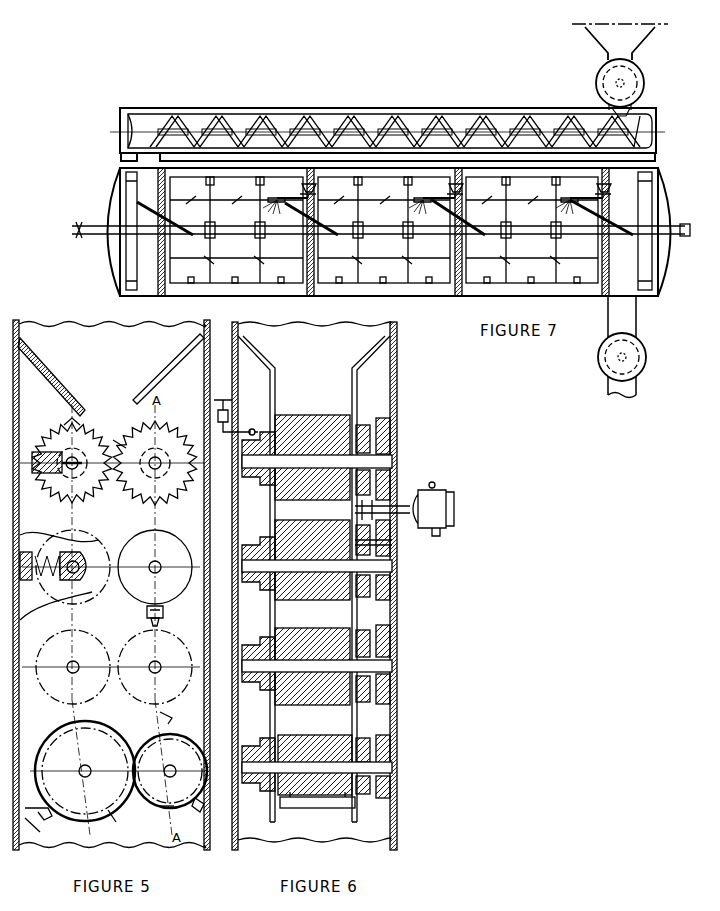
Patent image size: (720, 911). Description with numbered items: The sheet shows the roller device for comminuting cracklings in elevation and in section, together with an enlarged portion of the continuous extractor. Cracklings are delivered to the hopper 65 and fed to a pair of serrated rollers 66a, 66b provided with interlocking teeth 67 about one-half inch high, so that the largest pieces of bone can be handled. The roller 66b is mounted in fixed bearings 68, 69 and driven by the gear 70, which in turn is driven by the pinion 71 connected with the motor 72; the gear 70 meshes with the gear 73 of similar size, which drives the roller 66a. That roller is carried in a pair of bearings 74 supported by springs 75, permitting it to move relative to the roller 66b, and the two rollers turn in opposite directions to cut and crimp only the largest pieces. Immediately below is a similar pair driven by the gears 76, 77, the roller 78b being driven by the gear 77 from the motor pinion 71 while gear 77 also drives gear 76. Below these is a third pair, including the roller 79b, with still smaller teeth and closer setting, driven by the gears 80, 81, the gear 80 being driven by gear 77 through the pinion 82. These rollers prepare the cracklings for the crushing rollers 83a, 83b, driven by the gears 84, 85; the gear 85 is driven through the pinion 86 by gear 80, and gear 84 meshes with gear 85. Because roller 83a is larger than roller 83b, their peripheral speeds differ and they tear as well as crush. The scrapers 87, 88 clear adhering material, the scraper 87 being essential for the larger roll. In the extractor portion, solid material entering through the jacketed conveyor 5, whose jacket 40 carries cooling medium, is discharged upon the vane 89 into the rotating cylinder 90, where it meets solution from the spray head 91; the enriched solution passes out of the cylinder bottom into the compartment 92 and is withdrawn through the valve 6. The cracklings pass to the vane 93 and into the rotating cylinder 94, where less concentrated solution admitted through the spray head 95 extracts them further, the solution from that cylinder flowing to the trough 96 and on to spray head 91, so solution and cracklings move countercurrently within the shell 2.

In FIG. 7, the cylindrical shell 2 is at (381, 239).
In FIG. 7, the conveyor 5 is at (444, 126).
In FIG. 7, the valve 6 is at (381, 223).
In FIG. 7, the jacket 40 is at (396, 108).
In FIG. 5, the hopper 65 is at (70, 395).
In FIG. 5, the roller 66a is at (71, 463).
In FIG. 5, the roller 66b is at (154, 463).
In FIG. 6, the roller 66b is at (312, 457).
In FIG. 5, the interlocking teeth 67 is at (172, 420).
In FIG. 6, the fixed bearing 68 is at (252, 486).
In FIG. 6, the fixed bearing 69 is at (362, 424).
In FIG. 5, the gear 70 is at (130, 420).
In FIG. 6, the gear 70 is at (397, 446).
In FIG. 5, the pinion 71 is at (165, 526).
In FIG. 6, the pinion 71 is at (410, 490).
In FIG. 6, the motor 72 is at (454, 505).
In FIG. 5, the gear 73 is at (66, 425).
In FIG. 5, the bearings 74 is at (62, 482).
In FIG. 5, the springs 75 is at (40, 596).
In FIG. 5, the gear 76 is at (92, 600).
In FIG. 5, the gear 77 is at (147, 612).
In FIG. 6, the gear 77 is at (396, 553).
In FIG. 6, the roller 78b is at (312, 560).
In FIG. 6, the roller 79b is at (312, 666).
In FIG. 5, the gear 80 is at (155, 667).
In FIG. 6, the gear 80 is at (392, 654).
In FIG. 5, the gear 81 is at (73, 667).
In FIG. 5, the pinion 82 is at (163, 612).
In FIG. 6, the pinion 82 is at (392, 620).
In FIG. 5, the crushing roller 83a is at (64, 724).
In FIG. 5, the crushing roller 83b is at (150, 734).
In FIG. 6, the crushing roller 83b is at (315, 765).
In FIG. 5, the gear 84 is at (112, 812).
In FIG. 5, the gear 85 is at (164, 808).
In FIG. 6, the gear 85 is at (392, 758).
In FIG. 5, the pinion 86 is at (170, 714).
In FIG. 6, the pinion 86 is at (392, 726).
In FIG. 5, the scraper 87 is at (38, 818).
In FIG. 5, the scraper 88 is at (196, 812).
In FIG. 6, the scraper 88 is at (306, 808).
In FIG. 7, the vane 89 is at (160, 212).
In FIG. 7, the rotating cylinder 90 is at (248, 200).
In FIG. 7, the spray head 91 is at (277, 198).
In FIG. 7, the compartment 92 is at (141, 231).
In FIG. 7, the vane 93 is at (330, 210).
In FIG. 7, the rotating cylinder 94 is at (487, 230).
In FIG. 7, the spray head 95 is at (421, 198).
In FIG. 7, the trough 96 is at (300, 182).